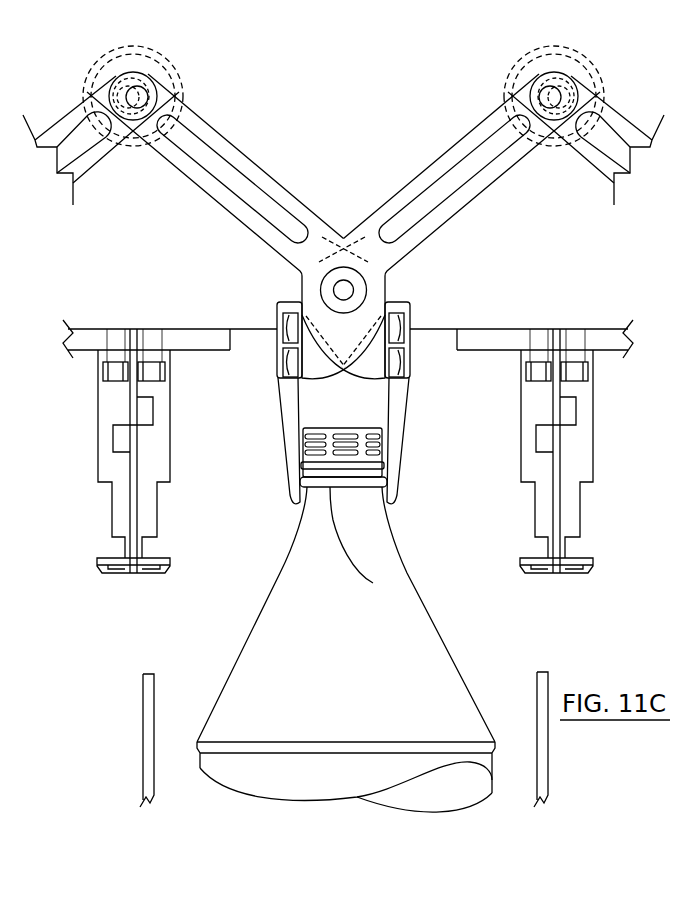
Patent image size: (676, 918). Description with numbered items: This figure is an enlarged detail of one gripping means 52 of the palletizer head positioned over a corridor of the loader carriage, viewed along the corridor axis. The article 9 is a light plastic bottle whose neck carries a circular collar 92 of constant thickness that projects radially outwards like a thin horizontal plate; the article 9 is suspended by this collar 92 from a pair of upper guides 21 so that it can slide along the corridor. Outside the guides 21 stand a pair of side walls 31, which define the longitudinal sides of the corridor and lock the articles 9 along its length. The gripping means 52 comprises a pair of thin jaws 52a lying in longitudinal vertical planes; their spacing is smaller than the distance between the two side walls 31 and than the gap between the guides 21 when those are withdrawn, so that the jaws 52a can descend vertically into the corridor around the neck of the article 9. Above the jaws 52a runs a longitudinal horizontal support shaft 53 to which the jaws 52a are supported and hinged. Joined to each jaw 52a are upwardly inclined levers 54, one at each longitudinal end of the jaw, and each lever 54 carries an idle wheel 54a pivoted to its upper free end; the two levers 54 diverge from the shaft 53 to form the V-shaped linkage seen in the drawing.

The article 9 is at (296, 782).
The upper guide 21 is at (112, 518).
The side wall 31 is at (143, 690).
The gripping means 52 is at (297, 194).
The jaw 52a is at (292, 452).
The support shaft 53 is at (346, 288).
The lever 54 is at (277, 172).
The idle wheel 54a is at (83, 96).
The collar 92 is at (373, 583).